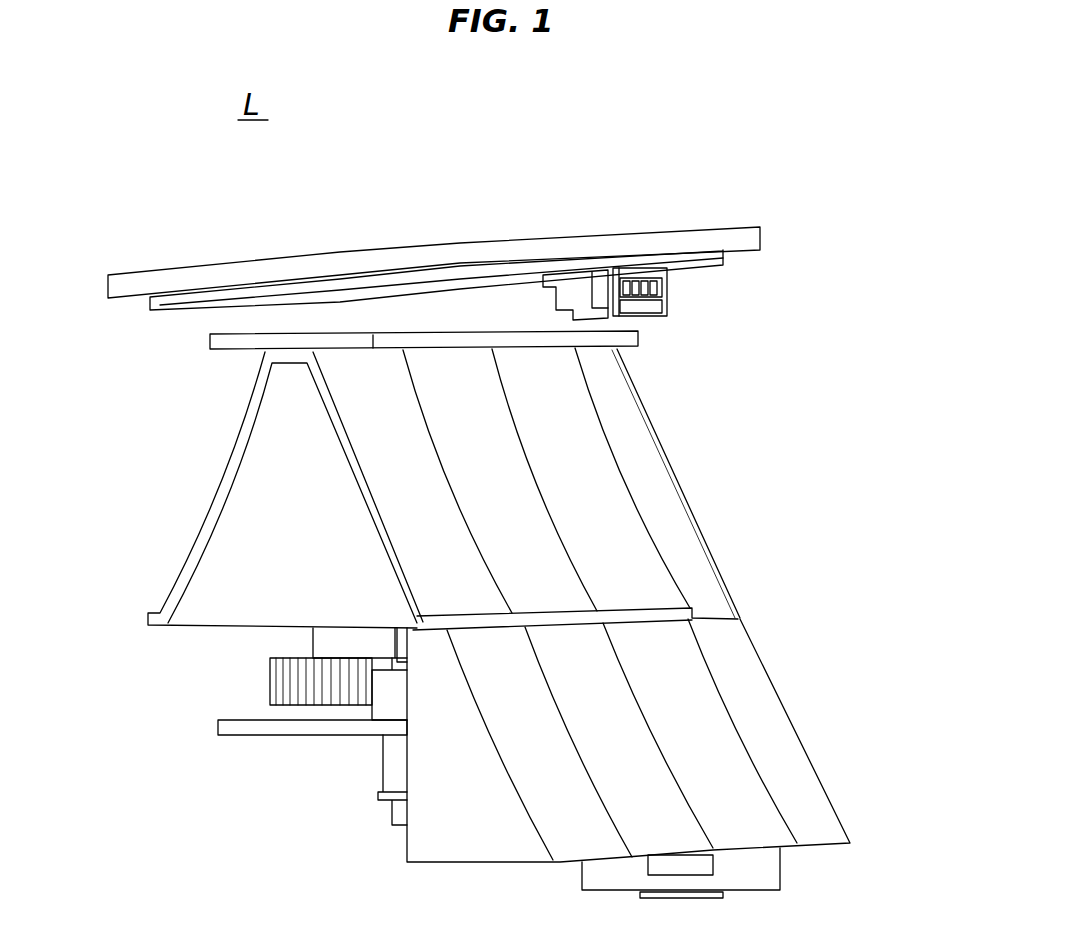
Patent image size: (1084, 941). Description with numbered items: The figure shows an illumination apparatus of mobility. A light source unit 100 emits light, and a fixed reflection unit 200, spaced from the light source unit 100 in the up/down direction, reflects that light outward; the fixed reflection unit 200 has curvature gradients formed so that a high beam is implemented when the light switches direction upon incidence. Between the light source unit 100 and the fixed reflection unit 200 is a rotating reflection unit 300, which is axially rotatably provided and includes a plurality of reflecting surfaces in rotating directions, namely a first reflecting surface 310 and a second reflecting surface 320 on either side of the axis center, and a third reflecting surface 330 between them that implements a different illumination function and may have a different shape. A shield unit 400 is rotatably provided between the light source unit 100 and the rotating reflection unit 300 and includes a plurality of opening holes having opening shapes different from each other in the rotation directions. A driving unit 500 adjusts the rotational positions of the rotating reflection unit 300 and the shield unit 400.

The light source unit 100 is at (617, 222).
The fixed reflection unit 200 is at (800, 713).
The rotating reflection unit 300 is at (621, 489).
The first reflecting surface 310 is at (628, 540).
The second reflecting surface 320 is at (205, 523).
The third reflecting surface 330 is at (637, 423).
The shield unit 400 is at (205, 343).
The driving unit 500 is at (370, 772).